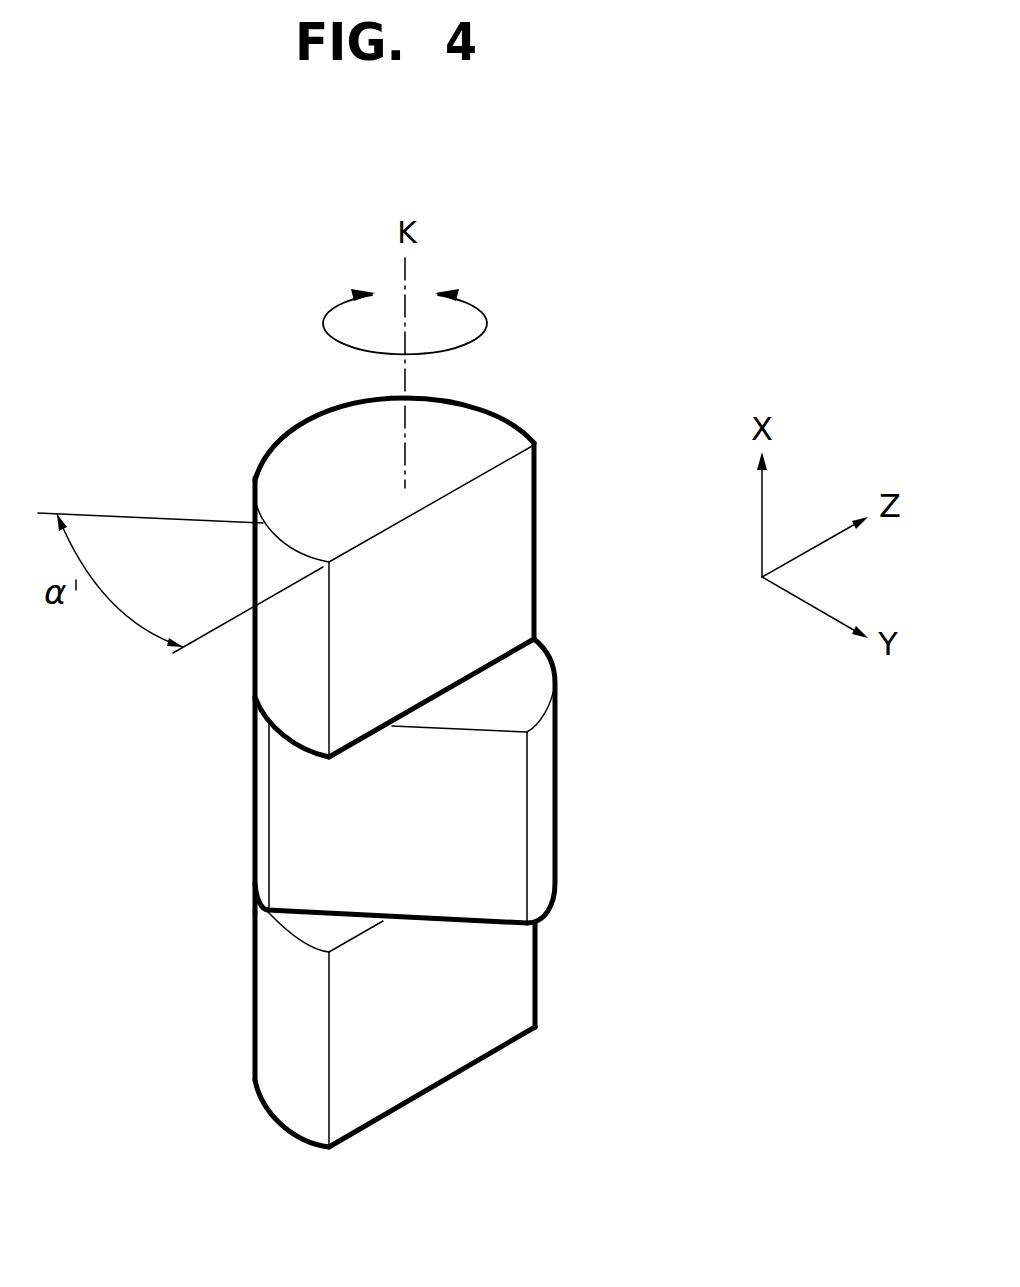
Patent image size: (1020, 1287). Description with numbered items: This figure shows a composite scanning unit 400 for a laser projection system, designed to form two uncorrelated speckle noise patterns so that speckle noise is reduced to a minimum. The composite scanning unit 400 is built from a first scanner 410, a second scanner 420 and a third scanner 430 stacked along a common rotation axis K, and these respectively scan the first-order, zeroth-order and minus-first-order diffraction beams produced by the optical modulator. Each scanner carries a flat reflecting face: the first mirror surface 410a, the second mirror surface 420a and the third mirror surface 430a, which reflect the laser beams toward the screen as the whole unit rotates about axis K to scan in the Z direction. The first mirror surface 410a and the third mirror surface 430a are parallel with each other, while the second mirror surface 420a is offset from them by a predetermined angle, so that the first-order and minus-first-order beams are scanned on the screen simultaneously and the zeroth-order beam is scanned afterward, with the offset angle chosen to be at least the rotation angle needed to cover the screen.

The composite scanning unit 400 is at (558, 312).
The first scanner 410 is at (470, 443).
The first mirror surface 410a is at (508, 551).
The second scanner 420 is at (543, 775).
The second mirror surface 420a is at (470, 828).
The third scanner 430 is at (283, 1017).
The third mirror surface 430a is at (511, 966).